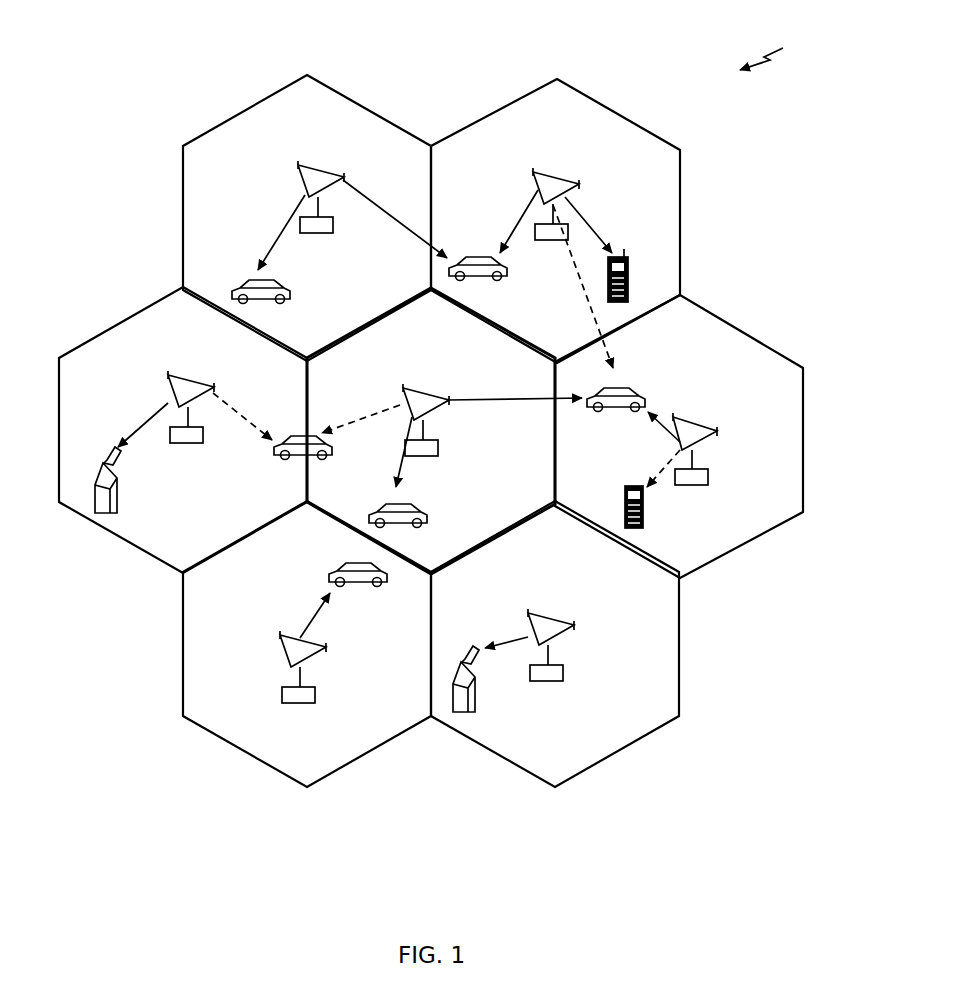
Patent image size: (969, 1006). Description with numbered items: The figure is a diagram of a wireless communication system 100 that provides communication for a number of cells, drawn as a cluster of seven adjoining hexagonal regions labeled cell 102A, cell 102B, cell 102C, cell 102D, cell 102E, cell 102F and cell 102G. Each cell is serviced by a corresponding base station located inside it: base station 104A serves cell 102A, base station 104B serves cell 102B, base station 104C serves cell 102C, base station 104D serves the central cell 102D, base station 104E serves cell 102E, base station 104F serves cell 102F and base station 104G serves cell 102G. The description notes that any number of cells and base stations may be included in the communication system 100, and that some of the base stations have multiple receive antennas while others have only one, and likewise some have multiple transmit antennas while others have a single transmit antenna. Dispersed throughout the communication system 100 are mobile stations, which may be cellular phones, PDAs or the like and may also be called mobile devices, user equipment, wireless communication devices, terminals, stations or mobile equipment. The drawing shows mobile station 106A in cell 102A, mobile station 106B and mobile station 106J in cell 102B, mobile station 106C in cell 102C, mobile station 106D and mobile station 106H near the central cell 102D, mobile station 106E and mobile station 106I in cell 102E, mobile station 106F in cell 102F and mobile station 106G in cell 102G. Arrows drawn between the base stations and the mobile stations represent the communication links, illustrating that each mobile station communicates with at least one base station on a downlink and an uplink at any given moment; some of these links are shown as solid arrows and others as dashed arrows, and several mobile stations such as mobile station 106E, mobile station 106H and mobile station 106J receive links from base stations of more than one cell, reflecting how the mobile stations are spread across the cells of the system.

The communication system 100 is at (786, 49).
The cell 102A is at (256, 103).
The cell 102B is at (612, 111).
The cell 102C is at (120, 327).
The cell 102D is at (456, 318).
The cell 102E is at (805, 437).
The cell 102F is at (183, 648).
The cell 102G is at (680, 632).
The base station 104A is at (300, 166).
The base station 104B is at (535, 173).
The base station 104C is at (170, 376).
The base station 104D is at (405, 389).
The base station 104E is at (675, 417).
The base station 104F is at (282, 636).
The base station 104G is at (530, 614).
The mobile station 106A is at (258, 282).
The mobile station 106B is at (618, 256).
The mobile station 106C is at (110, 462).
The mobile station 106D is at (396, 503).
The mobile station 106E is at (620, 386).
The mobile station 106F is at (354, 561).
The mobile station 106G is at (468, 650).
The mobile station 106H is at (300, 434).
The mobile station (handset) 106I is at (625, 486).
The mobile station (vehicle) 106J is at (478, 256).